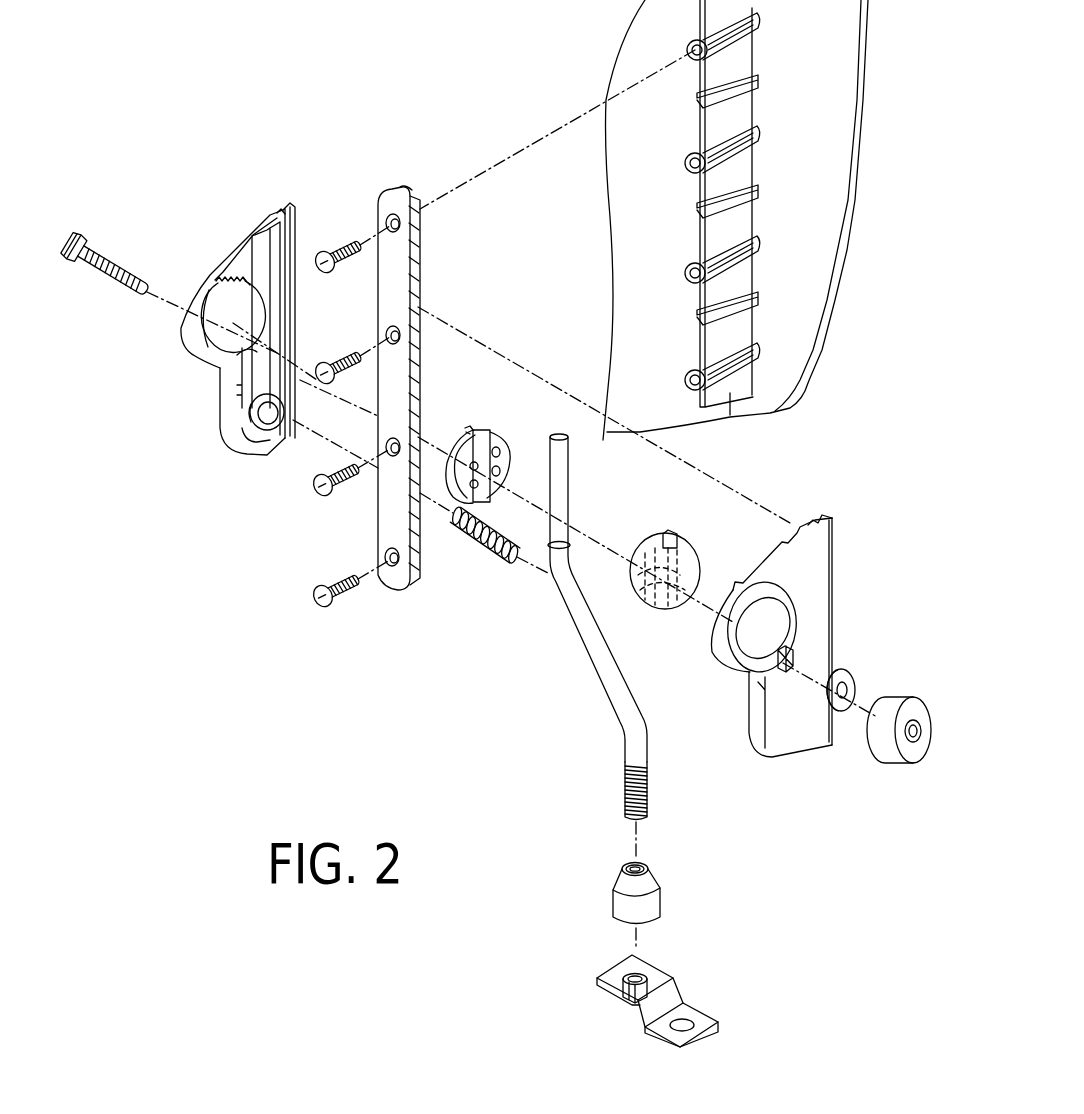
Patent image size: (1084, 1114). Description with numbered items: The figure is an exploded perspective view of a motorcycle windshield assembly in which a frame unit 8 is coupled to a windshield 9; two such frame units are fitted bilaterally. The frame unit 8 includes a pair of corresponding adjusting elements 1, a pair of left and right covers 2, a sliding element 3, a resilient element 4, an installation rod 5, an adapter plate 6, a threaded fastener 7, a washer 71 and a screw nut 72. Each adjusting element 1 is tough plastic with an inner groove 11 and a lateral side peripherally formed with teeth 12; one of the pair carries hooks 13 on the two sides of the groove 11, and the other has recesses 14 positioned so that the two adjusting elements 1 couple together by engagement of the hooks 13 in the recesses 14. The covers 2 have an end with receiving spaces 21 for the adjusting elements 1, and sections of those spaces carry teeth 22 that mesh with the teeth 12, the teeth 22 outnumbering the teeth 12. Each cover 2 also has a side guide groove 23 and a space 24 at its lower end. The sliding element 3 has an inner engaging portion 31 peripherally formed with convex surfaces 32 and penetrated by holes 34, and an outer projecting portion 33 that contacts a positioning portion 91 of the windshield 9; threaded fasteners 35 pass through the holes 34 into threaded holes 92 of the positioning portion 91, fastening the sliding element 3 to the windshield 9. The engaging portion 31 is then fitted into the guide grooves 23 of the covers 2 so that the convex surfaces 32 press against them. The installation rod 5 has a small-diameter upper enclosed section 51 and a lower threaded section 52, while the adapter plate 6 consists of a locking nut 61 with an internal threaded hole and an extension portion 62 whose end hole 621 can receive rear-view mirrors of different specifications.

The adjusting element 1 is at (642, 547).
The groove 11 is at (491, 451).
The teeth 12 is at (468, 432).
The hooks 13 is at (482, 487).
The recesses 14 is at (647, 578).
The cover 2 is at (480, 473).
The receiving space 21 is at (212, 330).
The teeth 22 is at (237, 280).
The guide groove 23 is at (287, 205).
The space 24 is at (265, 420).
The sliding element 3 is at (407, 339).
The engaging portion 31 is at (388, 297).
The convex surfaces 32 is at (415, 256).
The projecting portion 33 is at (410, 193).
The holes 34 is at (388, 213).
The threaded fasteners 35 is at (340, 578).
The resilient element 4 is at (487, 548).
The installation rod 5 is at (583, 608).
The enclosed section 51 is at (555, 470).
The threaded section 52 is at (624, 780).
The adapter plate 6 is at (665, 955).
The locking nut 61 is at (653, 905).
The extension portion 62 is at (691, 990).
The hole 621 is at (687, 1024).
The threaded fastener 7 is at (117, 247).
The washer 71 is at (843, 670).
The screw nut 72 is at (903, 697).
The frame unit 8 is at (231, 572).
The windshield 9 is at (746, 220).
The positioning portion 91 is at (686, 270).
The threaded holes 92 is at (686, 164).